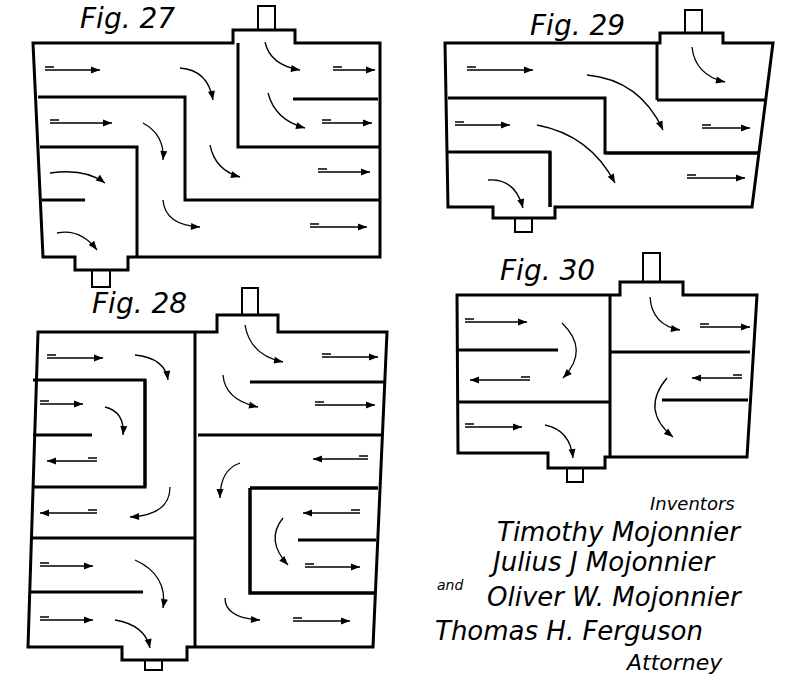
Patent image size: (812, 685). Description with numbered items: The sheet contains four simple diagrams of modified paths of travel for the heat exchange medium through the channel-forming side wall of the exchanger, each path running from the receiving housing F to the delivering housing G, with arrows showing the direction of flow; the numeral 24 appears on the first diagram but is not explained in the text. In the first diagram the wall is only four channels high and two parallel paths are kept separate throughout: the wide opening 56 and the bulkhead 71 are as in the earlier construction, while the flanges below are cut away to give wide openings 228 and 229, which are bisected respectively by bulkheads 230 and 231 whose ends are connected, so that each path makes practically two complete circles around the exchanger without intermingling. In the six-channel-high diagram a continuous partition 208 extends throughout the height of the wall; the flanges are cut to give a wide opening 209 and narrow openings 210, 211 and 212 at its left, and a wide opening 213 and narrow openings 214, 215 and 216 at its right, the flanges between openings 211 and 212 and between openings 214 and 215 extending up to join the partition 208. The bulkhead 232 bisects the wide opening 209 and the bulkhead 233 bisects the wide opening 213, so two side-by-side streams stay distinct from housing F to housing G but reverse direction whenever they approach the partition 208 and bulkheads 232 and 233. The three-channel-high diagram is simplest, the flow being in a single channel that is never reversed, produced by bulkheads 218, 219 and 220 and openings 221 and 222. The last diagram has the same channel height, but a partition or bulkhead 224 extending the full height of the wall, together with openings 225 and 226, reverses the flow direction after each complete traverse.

In FIG. 27, the fluid treating unit housing 24 is at (206, 135).
In FIG. 27, the receiving housing F is at (277, 19).
In FIG. 29, the receiving housing F is at (709, 19).
In FIG. 28, the receiving housing F is at (266, 301).
In FIG. 30, the receiving housing F is at (664, 267).
In FIG. 27, the delivering housing G is at (72, 267).
In FIG. 29, the delivering housing G is at (493, 215).
In FIG. 28, the delivering housing G is at (187, 658).
In FIG. 30, the delivering housing G is at (548, 468).
In FIG. 27, the bulkhead 71 is at (240, 102).
In FIG. 27, the wide opening 56 is at (193, 100).
In FIG. 27, the wide opening 228 is at (228, 152).
In FIG. 30, the wide opening 228 is at (666, 376).
In FIG. 27, the wide opening 229 is at (148, 210).
In FIG. 27, the bulkhead 230 is at (182, 168).
In FIG. 27, the bulkhead 231 is at (133, 222).
In FIG. 29, the bulkhead 218 is at (657, 60).
In FIG. 29, the opening 221 is at (647, 102).
In FIG. 29, the bulkhead 219 is at (591, 154).
In FIG. 29, the opening 222 is at (595, 155).
In FIG. 29, the bulkhead 220 is at (550, 180).
In FIG. 28, the continuous partition 208 is at (196, 475).
In FIG. 28, the narrow opening 214 is at (243, 387).
In FIG. 28, the narrow opening 210 is at (153, 383).
In FIG. 28, the wide opening 209 is at (103, 437).
In FIG. 28, the bulkhead 232 is at (145, 455).
In FIG. 28, the narrow opening 211 is at (152, 488).
In FIG. 28, the narrow opening 212 is at (148, 590).
In FIG. 28, the narrow opening 215 is at (250, 488).
In FIG. 28, the wide opening 213 is at (290, 537).
In FIG. 28, the bulkhead 233 is at (249, 532).
In FIG. 28, the narrow opening 216 is at (240, 596).
In FIG. 30, the partition or bulkhead 224 is at (612, 322).
In FIG. 30, the opening 225 is at (567, 348).
In FIG. 30, the opening 226 is at (652, 405).